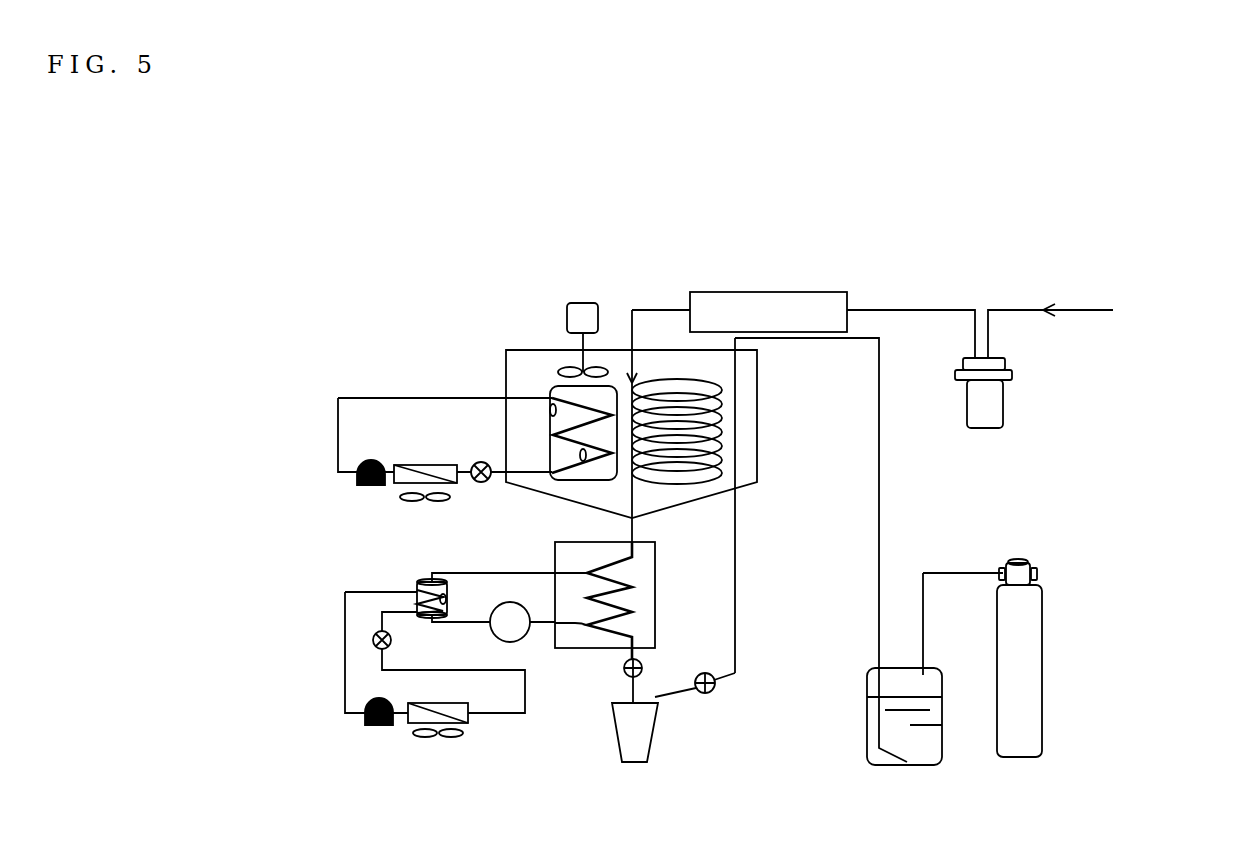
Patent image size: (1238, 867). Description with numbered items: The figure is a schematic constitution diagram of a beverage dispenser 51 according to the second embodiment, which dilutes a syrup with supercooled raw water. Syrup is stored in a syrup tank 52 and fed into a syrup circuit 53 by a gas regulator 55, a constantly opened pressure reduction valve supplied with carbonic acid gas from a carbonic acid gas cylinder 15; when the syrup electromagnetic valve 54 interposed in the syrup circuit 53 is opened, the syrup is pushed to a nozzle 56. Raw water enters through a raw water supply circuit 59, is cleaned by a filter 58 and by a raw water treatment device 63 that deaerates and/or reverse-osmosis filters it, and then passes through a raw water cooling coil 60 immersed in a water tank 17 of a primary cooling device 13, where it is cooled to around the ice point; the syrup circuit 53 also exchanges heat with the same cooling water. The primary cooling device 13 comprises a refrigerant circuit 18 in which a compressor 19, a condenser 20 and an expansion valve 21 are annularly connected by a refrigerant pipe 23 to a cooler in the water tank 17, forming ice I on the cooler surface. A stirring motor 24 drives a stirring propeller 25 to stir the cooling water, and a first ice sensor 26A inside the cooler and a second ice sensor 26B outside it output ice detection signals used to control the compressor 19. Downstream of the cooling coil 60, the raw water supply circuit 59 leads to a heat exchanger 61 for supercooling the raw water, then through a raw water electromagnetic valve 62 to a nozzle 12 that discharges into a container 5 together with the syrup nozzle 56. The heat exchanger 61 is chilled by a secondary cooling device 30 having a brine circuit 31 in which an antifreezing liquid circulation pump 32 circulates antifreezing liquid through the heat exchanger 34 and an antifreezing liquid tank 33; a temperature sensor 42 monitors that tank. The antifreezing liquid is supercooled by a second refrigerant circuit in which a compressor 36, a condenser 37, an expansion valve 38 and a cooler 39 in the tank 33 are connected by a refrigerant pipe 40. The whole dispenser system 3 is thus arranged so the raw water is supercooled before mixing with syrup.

The hydrogen generation system 3 is at (1150, 431).
The container 5 is at (640, 737).
The nozzle 12 is at (620, 705).
The primary cooling device 13 is at (320, 360).
The carbonic acid gas cylinder 15 is at (1027, 670).
The water tank 17 is at (662, 350).
The refrigerant circuit 18 is at (382, 397).
The compressor 19 is at (345, 485).
The condenser 20 is at (420, 480).
The expansion valve 21 is at (480, 462).
The refrigerant pipe 23 is at (338, 432).
The stirring motor 24 is at (574, 303).
The stirring propeller 25 is at (558, 366).
The first ice sensor 26A is at (590, 457).
The second ice sensor 26B is at (550, 412).
The secondary cooling device 30 is at (315, 760).
The brine circuit 31 is at (568, 625).
The antifreezing liquid circulation pump 32 is at (510, 632).
The antifreezing liquid tank 33 is at (428, 580).
The heat exchanger 34 is at (657, 627).
The compressor 36 is at (375, 727).
The condenser 37 is at (438, 718).
The expansion valve 38 is at (374, 642).
The cooler 39 is at (413, 592).
The refrigerant pipe 40 is at (345, 712).
The temperature sensor 42 is at (447, 600).
The beverage dispenser 51 is at (422, 236).
The syrup tank 52 is at (920, 758).
The syrup circuit 53 is at (880, 500).
The syrup electromagnetic valve 54 is at (720, 684).
The gas regulator 55 is at (1020, 575).
The nozzle 56 is at (657, 700).
The filter 58 is at (993, 402).
The raw water supply circuit 59 is at (890, 308).
The raw water cooling coil 60 is at (712, 437).
The heat exchanger for supercooling the raw water 61 is at (685, 590).
The raw water electromagnetic valve 62 is at (643, 665).
The raw water treatment device 63 is at (760, 300).
The ice I is at (547, 462).